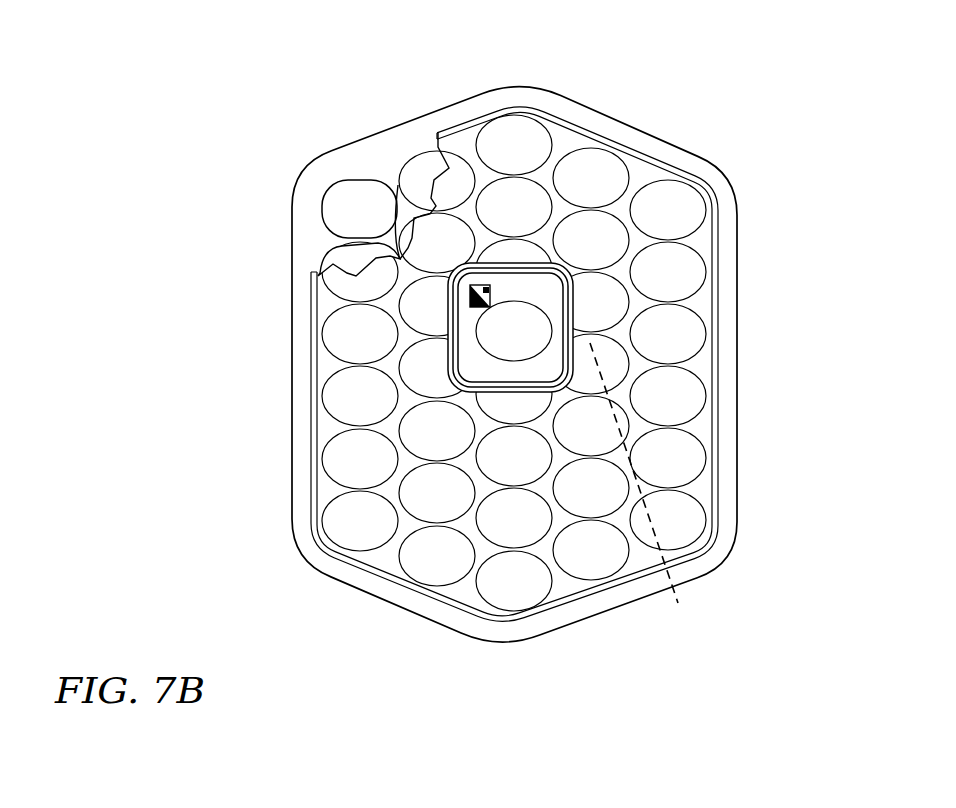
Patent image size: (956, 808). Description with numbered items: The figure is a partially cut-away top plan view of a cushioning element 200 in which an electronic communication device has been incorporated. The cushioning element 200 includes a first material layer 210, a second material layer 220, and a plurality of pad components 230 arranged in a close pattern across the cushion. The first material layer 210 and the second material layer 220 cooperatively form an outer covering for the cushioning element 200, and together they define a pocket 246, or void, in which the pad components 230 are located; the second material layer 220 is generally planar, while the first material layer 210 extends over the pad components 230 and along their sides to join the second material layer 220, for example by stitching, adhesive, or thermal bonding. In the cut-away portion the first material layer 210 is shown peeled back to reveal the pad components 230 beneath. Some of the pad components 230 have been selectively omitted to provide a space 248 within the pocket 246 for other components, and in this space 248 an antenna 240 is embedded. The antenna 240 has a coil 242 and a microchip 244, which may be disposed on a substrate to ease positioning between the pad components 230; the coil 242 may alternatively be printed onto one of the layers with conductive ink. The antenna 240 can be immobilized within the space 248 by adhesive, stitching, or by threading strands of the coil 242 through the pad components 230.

The cushioning element 200 is at (511, 357).
The first material layer 210 is at (718, 248).
The second material layer 220 is at (737, 445).
The pad components 230 is at (380, 223).
The antenna 240 is at (370, 209).
The coil 242 is at (530, 268).
The microchip 244 is at (519, 168).
The pocket 246 is at (389, 238).
The space 248 is at (646, 492).